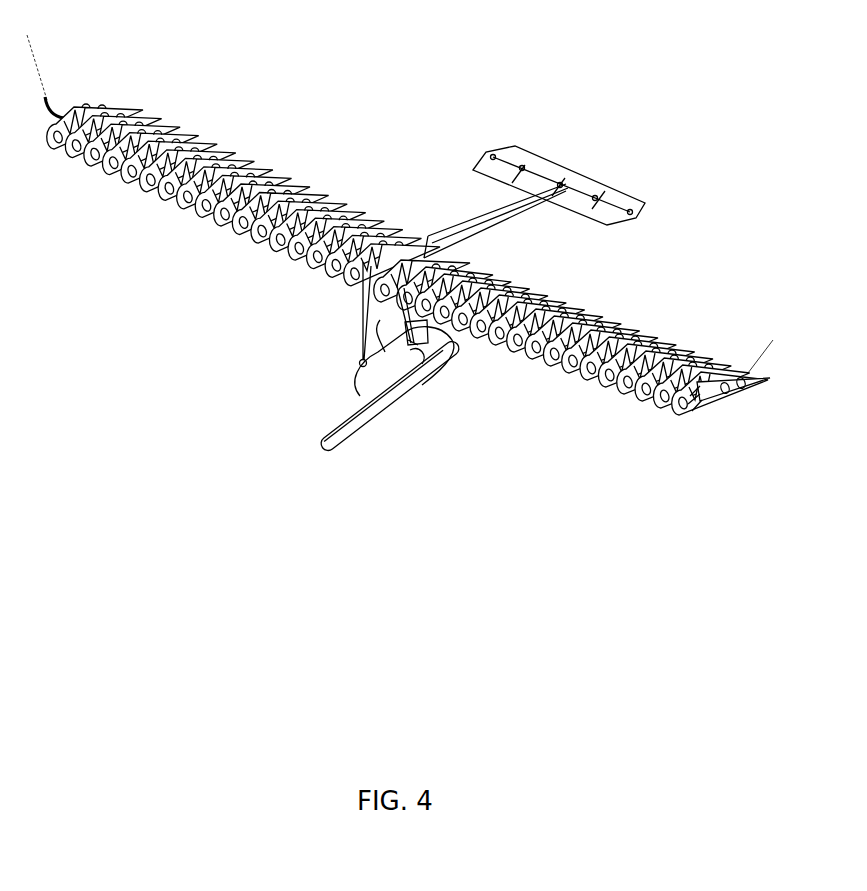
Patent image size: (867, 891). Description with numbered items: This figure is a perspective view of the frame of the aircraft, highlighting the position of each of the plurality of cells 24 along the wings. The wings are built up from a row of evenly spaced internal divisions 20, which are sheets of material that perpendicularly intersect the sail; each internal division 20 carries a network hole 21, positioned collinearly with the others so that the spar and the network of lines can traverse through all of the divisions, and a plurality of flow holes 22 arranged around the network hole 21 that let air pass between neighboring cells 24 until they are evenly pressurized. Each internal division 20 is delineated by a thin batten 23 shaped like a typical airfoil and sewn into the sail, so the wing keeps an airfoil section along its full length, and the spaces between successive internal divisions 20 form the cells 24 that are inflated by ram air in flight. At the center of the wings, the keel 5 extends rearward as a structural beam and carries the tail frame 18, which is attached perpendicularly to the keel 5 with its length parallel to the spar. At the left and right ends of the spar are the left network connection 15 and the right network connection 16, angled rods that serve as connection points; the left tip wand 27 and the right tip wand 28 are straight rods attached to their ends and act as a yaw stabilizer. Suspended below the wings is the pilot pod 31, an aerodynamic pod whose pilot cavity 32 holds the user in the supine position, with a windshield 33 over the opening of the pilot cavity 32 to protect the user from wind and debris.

The keel 5 is at (517, 227).
The left network connection 15 is at (722, 400).
The right network connection 16 is at (57, 111).
The tail frame 18 is at (564, 140).
The plurality of internal divisions 20 is at (398, 266).
The network hole 21 is at (93, 112).
The plurality of flow holes 22 is at (137, 108).
The plurality of thin battens 23 is at (317, 203).
The plurality of cells 24 is at (398, 266).
The left tip wand 27 is at (758, 350).
The right tip wand 28 is at (35, 62).
The pilot pod 31 is at (407, 416).
The pilot cavity 32 is at (418, 362).
The windshield 33 is at (380, 377).